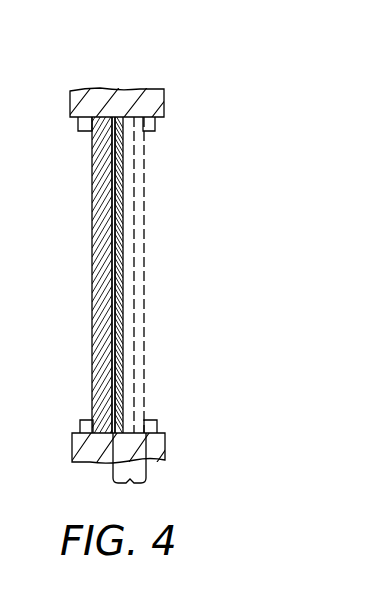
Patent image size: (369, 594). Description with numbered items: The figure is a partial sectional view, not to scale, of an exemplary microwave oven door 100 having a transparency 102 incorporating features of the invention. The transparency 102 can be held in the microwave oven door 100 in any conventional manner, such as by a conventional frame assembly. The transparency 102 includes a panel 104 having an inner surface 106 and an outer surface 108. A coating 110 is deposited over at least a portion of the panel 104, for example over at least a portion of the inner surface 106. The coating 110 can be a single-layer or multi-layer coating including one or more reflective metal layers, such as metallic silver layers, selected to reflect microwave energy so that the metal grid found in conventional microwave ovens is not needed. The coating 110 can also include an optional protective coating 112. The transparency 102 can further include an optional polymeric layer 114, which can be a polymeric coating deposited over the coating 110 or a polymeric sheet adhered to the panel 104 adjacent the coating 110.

The microwave oven door 100 is at (109, 94).
The transparency 102 is at (199, 121).
The panel 104 is at (91, 368).
The inner (No. 1) surface 106 is at (117, 233).
The outer (No. 2) surface 108 is at (90, 262).
The coating 110 is at (130, 484).
The protective coating 112 is at (133, 199).
The polymeric layer 114 is at (145, 158).